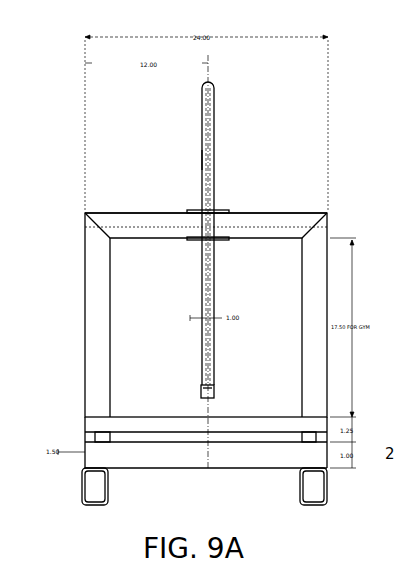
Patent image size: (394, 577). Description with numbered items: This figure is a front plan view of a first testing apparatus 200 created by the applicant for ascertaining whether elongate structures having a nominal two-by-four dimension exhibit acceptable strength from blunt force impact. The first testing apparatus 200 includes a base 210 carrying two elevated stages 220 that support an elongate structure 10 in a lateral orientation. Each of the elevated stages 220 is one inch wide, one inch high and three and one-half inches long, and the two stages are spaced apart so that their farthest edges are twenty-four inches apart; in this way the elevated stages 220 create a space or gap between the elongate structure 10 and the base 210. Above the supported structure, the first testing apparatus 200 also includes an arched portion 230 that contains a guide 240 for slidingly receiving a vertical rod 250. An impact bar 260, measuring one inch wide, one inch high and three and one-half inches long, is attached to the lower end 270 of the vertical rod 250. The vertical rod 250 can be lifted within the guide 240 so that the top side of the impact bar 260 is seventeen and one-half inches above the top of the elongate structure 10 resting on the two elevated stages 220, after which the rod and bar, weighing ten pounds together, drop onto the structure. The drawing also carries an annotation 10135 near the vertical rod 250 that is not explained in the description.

The first testing apparatus 200 is at (36, 285).
The elongate structure 10 is at (150, 425).
The base 210 is at (226, 458).
The elevated stages 220 is at (85, 443).
The arched portion 230 is at (132, 217).
The guide 240 is at (222, 210).
The vertical rod 250 is at (201, 133).
The impact bar 260 is at (215, 392).
The lower end 270 is at (203, 387).
The rod part 10135 is at (200, 160).